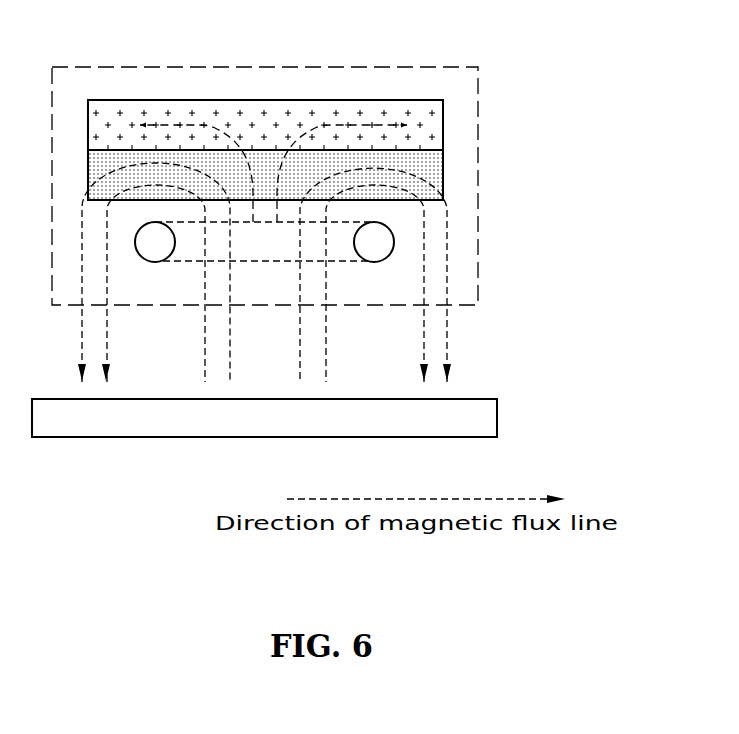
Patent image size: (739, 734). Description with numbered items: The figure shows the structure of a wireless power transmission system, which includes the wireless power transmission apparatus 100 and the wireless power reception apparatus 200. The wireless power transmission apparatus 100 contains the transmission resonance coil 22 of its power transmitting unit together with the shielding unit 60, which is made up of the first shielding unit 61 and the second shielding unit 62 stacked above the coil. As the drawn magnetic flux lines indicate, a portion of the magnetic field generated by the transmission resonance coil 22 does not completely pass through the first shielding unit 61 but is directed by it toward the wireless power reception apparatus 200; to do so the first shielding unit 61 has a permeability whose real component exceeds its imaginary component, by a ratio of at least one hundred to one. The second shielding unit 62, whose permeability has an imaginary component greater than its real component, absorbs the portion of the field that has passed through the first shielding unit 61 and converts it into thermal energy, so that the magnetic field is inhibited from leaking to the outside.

The wireless power transmission apparatus 100 is at (407, 67).
The shielding unit 60 is at (309, 115).
The second shielding unit 62 is at (443, 130).
The first shielding unit 61 is at (443, 175).
The transmission resonance coil 22 is at (387, 245).
The wireless power reception apparatus 200 is at (497, 418).